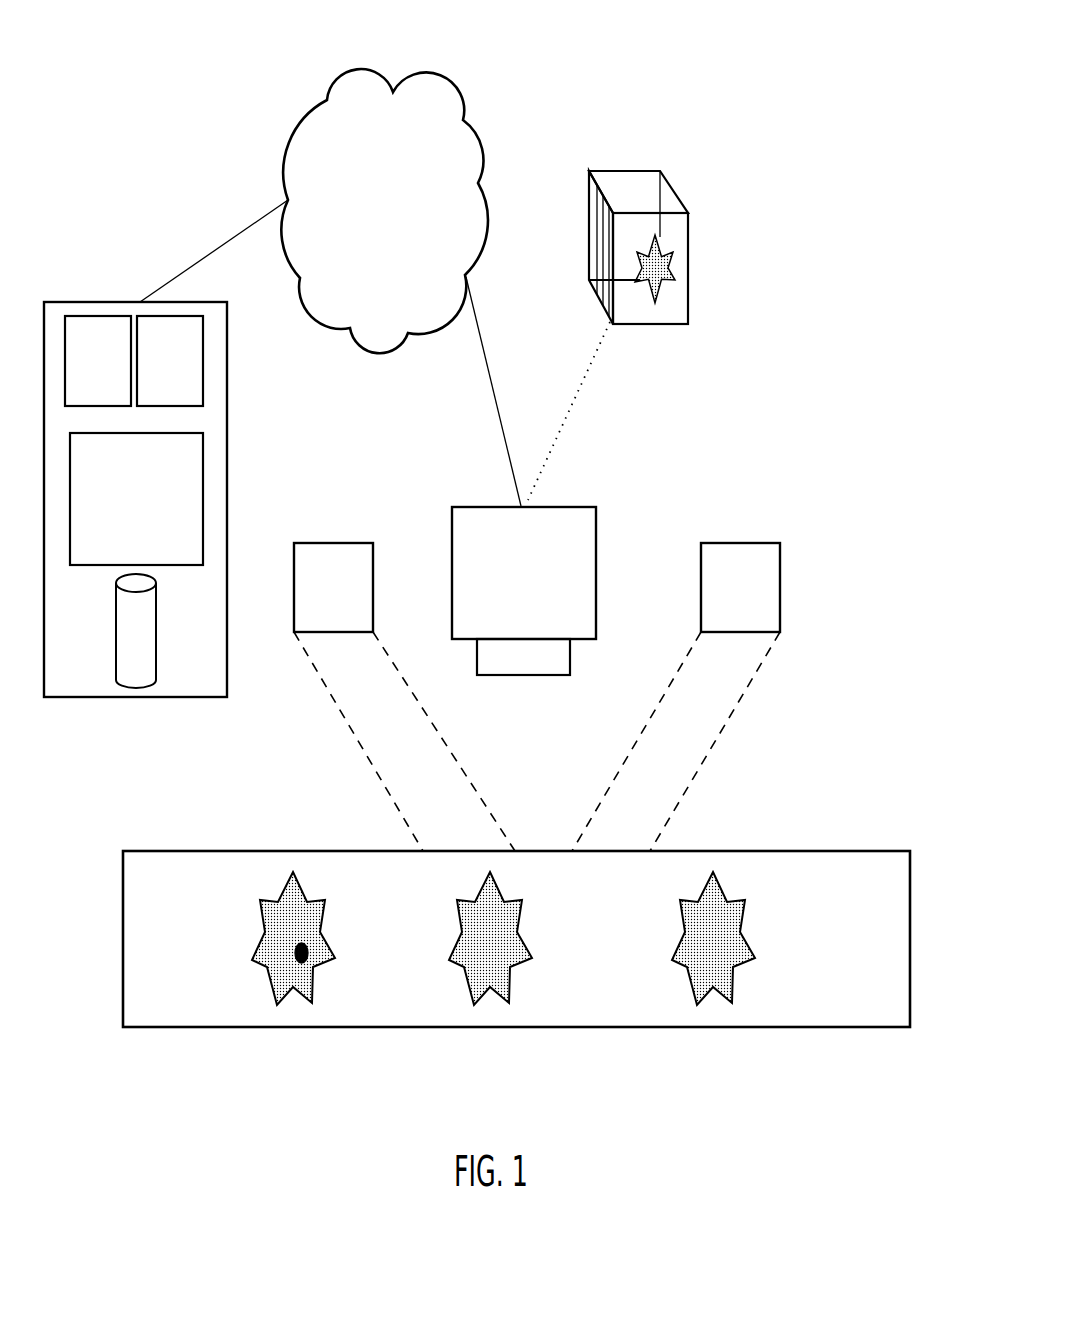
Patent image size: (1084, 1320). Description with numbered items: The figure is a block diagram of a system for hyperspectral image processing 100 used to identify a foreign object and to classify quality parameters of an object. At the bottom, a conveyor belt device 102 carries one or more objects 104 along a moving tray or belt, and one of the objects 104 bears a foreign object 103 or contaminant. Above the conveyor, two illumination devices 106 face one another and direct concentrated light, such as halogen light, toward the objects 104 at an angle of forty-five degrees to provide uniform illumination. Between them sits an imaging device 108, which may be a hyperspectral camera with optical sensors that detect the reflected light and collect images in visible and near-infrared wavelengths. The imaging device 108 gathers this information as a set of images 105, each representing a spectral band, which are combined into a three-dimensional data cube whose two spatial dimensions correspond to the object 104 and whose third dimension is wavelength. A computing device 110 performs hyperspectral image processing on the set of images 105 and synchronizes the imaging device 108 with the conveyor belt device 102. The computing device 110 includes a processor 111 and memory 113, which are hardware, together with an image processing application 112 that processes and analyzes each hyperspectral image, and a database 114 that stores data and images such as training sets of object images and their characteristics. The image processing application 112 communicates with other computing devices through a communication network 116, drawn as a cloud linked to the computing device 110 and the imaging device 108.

The system for hyperspectral image processing 100 is at (882, 100).
The conveyor belt device 102 is at (855, 845).
The foreign object 103 is at (303, 960).
The object 104 is at (325, 940).
The set of images 105 is at (672, 183).
The illumination device 106 is at (360, 542).
The imaging device 108 is at (567, 508).
The computing device 110 is at (228, 397).
The processor 111 is at (86, 373).
The image processing application 112 is at (124, 510).
The memory 113 is at (158, 373).
The database 114 is at (157, 638).
The communication network 116 is at (482, 145).